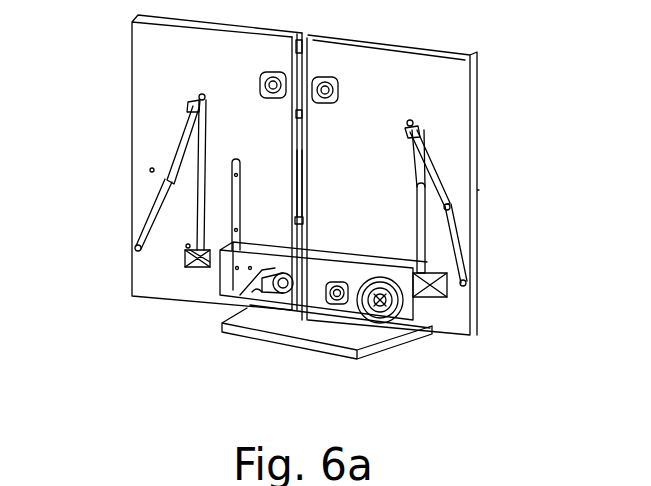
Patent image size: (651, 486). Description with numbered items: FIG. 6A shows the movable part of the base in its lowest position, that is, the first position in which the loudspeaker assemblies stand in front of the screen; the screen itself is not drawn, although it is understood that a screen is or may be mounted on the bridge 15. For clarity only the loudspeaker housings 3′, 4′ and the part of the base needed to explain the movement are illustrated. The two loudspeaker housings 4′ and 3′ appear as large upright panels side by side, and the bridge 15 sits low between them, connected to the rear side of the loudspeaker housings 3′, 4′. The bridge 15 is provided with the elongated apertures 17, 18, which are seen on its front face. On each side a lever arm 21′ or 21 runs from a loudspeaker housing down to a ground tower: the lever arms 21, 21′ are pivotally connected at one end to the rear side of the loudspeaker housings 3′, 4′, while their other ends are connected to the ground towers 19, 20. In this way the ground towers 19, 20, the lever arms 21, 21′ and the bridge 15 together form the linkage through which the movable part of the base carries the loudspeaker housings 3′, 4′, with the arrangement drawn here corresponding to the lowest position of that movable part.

The loudspeaker housing 4′ is at (140, 45).
The loudspeaker housing 3′ is at (443, 100).
The lever arm 21′ is at (152, 215).
The ground tower 20 is at (183, 240).
The lever arm 21 is at (452, 235).
The ground tower 19 is at (465, 284).
The bridge 15 is at (227, 273).
The elongated aperture 17 is at (283, 293).
The elongated aperture 18 is at (337, 310).